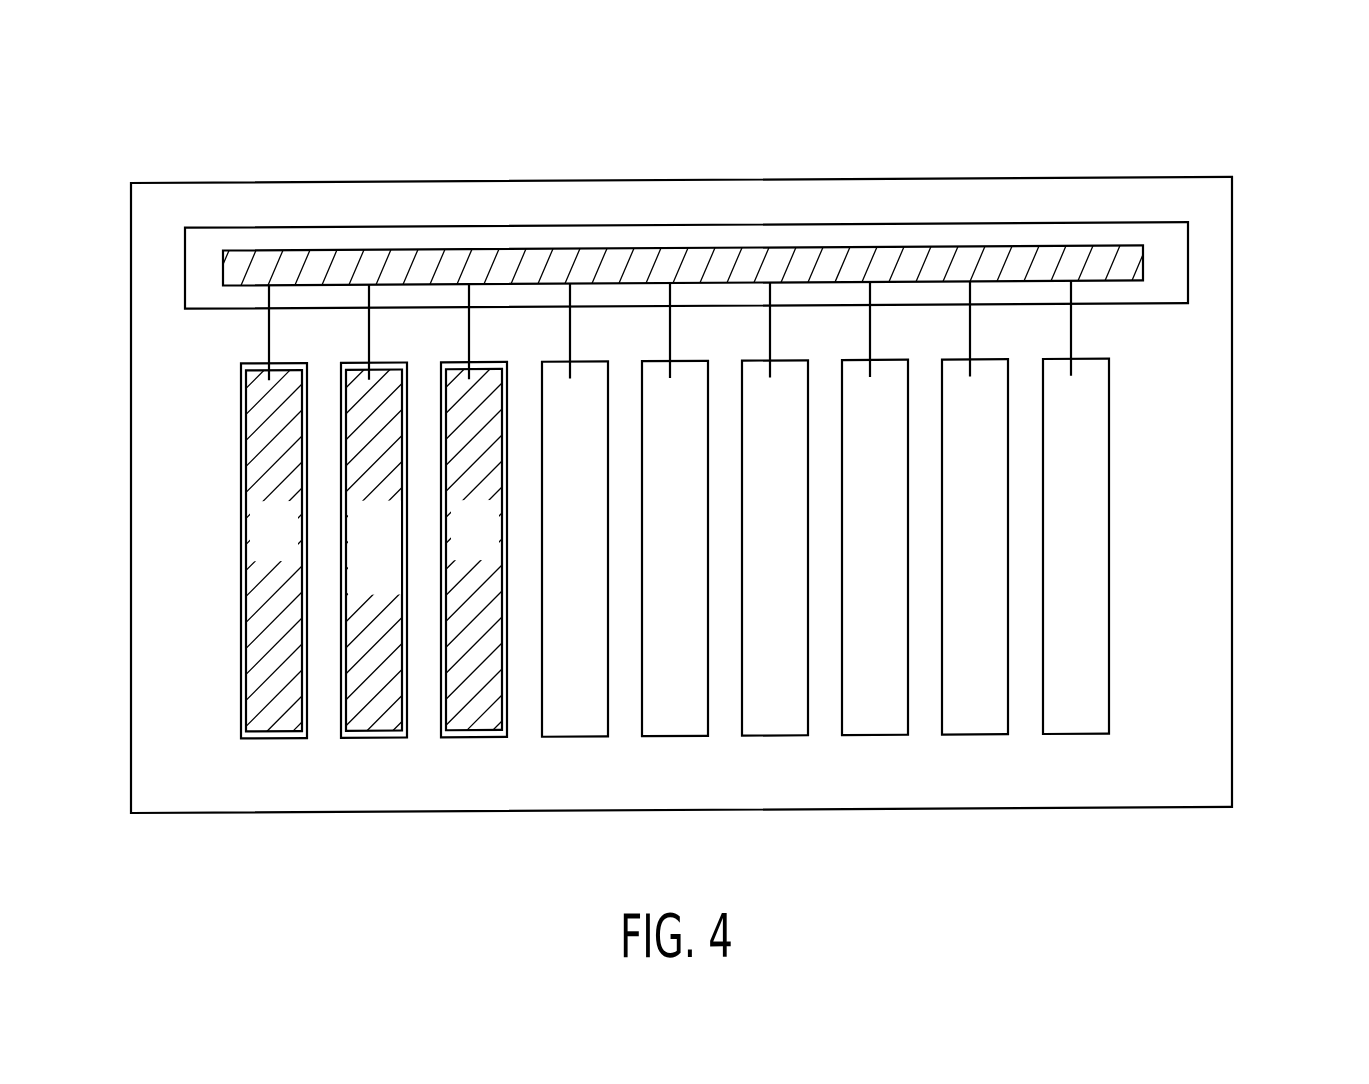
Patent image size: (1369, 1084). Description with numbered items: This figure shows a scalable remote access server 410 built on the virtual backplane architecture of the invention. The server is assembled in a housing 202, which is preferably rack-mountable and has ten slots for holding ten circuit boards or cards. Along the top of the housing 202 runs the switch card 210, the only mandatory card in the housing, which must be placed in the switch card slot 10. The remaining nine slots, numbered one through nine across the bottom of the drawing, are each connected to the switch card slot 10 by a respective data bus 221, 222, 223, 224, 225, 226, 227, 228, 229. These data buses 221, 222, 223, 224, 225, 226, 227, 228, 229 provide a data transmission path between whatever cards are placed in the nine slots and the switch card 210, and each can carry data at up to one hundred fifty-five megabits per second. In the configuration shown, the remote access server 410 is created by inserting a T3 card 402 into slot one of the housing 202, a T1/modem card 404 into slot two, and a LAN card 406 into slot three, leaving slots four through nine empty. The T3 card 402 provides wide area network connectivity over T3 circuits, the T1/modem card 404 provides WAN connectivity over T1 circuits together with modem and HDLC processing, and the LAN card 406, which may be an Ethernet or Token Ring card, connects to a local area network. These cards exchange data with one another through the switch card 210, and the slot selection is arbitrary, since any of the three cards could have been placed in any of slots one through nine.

The switch card slot 10 is at (1188, 267).
The housing 202 is at (240, 183).
The switch card 210 is at (415, 252).
The data bus 221 is at (269, 355).
The data bus 222 is at (369, 355).
The data bus 223 is at (469, 355).
The data bus 224 is at (570, 355).
The data bus 225 is at (670, 355).
The data bus 226 is at (770, 355).
The data bus 227 is at (870, 355).
The data bus 228 is at (970, 355).
The data bus 229 is at (1071, 355).
The T3 card 402 is at (248, 677).
The T1/modem card 404 is at (353, 732).
The LAN card 406 is at (463, 732).
The chassis configuration 410 is at (1208, 140).